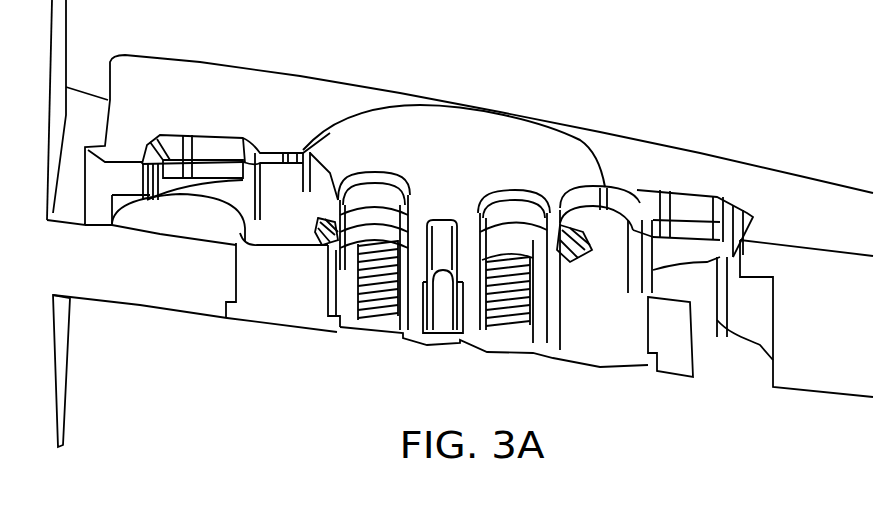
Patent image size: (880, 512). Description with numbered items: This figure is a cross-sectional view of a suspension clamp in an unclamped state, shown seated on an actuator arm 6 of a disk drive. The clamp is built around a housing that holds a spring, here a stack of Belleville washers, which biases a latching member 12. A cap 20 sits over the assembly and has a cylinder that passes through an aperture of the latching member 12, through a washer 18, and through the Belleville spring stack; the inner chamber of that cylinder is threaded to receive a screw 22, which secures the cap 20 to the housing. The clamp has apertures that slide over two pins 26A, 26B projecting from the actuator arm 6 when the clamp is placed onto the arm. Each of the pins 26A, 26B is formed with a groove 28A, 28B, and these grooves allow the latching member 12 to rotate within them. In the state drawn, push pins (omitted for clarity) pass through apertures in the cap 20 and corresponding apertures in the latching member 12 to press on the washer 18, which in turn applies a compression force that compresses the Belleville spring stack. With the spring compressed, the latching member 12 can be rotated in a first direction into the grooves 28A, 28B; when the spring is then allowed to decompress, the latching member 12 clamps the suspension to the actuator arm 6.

The actuator arm 6 is at (144, 298).
The latching member 12 is at (377, 200).
The washer 18 is at (512, 237).
The cap 20 is at (467, 130).
The screw 22 is at (445, 327).
The pin 26A is at (278, 310).
The pin 26B is at (602, 353).
The groove 28A is at (309, 232).
The groove 28B is at (578, 266).